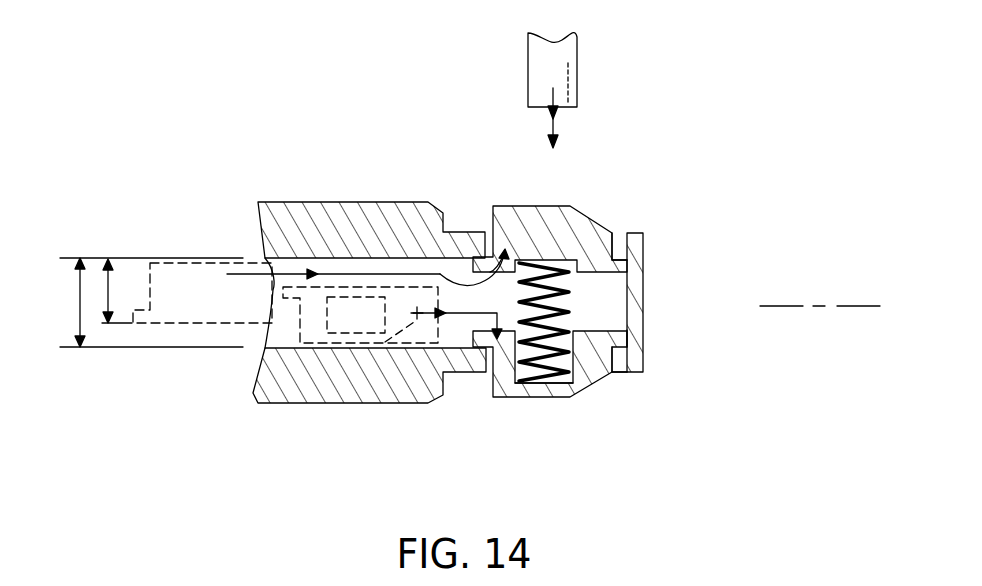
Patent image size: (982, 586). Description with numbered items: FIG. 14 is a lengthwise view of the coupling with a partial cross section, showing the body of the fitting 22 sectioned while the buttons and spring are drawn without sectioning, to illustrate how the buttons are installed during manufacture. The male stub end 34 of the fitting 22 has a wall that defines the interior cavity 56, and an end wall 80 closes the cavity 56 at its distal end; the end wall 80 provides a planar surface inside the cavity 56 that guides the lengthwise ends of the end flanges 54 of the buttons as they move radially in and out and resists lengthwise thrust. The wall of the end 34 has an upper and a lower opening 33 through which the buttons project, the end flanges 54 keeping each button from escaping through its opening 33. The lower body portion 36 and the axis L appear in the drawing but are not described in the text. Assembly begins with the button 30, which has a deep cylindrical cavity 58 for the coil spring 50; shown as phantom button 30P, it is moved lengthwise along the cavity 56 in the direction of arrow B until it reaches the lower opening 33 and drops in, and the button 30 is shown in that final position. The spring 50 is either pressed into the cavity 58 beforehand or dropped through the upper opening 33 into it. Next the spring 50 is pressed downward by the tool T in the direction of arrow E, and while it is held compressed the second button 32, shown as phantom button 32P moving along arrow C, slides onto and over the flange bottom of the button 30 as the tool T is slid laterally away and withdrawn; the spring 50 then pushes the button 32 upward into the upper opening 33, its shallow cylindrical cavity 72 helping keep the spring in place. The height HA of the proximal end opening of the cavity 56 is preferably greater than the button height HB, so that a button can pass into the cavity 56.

The fitting 22 is at (358, 194).
The lower body portion 36 is at (340, 396).
The cavity 56 is at (284, 266).
The arrow C is at (440, 272).
The arrow B is at (453, 313).
The button 32 is at (555, 206).
The shallow cylindrical cavity 72 is at (525, 255).
The opening 33 is at (603, 234).
The end wall 80 is at (640, 268).
The end flange 54 is at (628, 337).
The male stub end 34 is at (630, 372).
The button 30 is at (503, 392).
The cylindrical cavity 58 is at (524, 378).
The spring 50 is at (567, 330).
The phantom button 32P is at (190, 268).
The phantom button 30P is at (307, 328).
The height of the proximal end opening HA is at (140, 302).
The height of a button HB is at (122, 291).
The tool T is at (528, 75).
The arrow E is at (558, 122).
The axis L is at (850, 305).